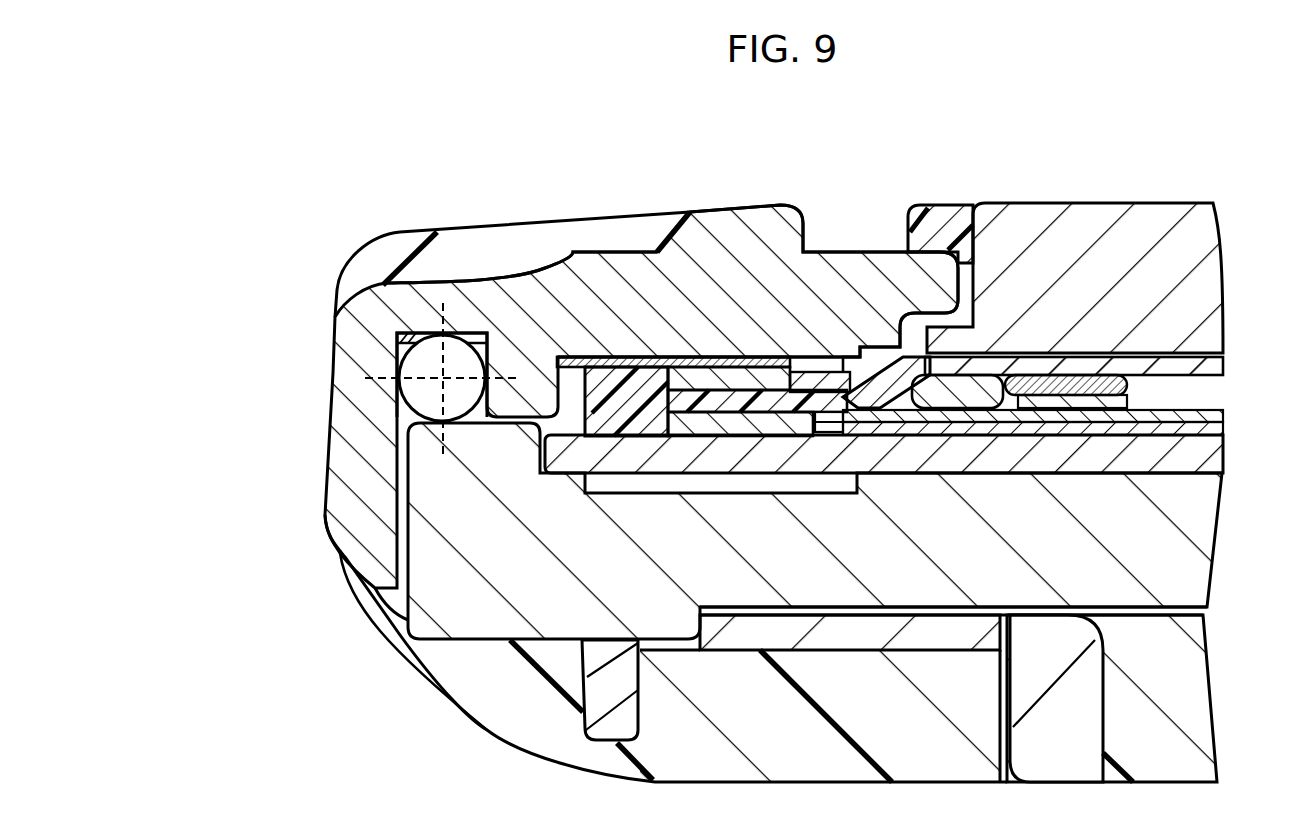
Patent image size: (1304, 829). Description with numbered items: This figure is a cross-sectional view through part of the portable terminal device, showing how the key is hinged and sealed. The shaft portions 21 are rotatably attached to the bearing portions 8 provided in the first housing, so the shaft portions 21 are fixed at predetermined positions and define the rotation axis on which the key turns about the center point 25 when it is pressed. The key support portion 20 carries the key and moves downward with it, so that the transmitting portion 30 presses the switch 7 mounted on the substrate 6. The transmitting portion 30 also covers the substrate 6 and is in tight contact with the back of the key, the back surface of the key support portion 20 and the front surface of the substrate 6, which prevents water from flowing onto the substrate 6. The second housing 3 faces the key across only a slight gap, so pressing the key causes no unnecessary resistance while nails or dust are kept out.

The second housing 3 is at (557, 730).
The substrate 6 is at (1178, 452).
The switch 7 is at (1203, 432).
The bearing portions 8 is at (510, 398).
The key support portion 20 is at (588, 267).
The shaft portions 21 is at (405, 398).
The center point 25 is at (400, 345).
The transmitting portion 30 is at (636, 383).